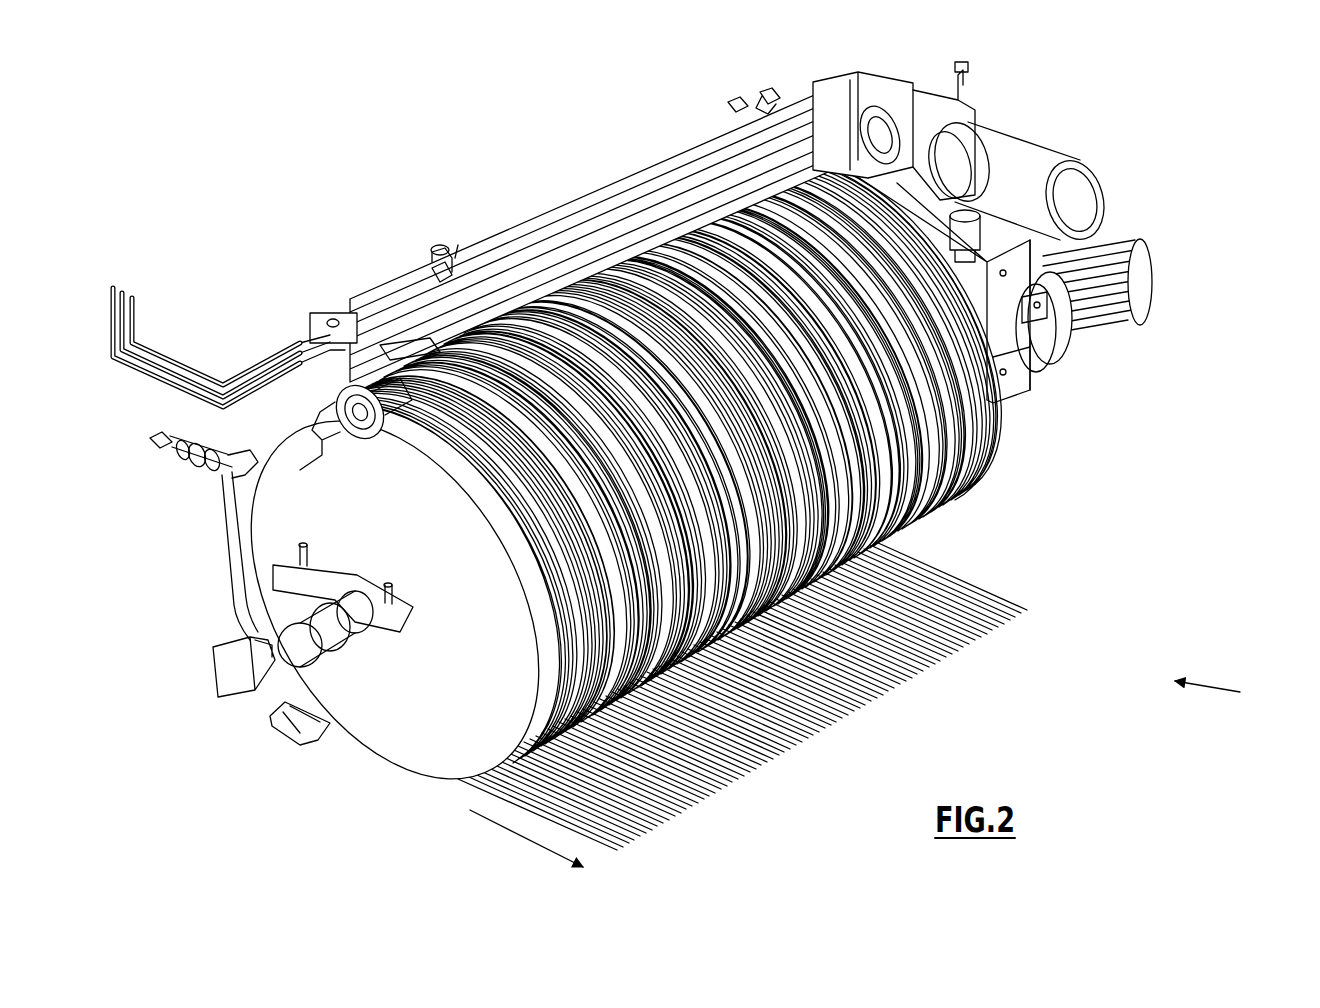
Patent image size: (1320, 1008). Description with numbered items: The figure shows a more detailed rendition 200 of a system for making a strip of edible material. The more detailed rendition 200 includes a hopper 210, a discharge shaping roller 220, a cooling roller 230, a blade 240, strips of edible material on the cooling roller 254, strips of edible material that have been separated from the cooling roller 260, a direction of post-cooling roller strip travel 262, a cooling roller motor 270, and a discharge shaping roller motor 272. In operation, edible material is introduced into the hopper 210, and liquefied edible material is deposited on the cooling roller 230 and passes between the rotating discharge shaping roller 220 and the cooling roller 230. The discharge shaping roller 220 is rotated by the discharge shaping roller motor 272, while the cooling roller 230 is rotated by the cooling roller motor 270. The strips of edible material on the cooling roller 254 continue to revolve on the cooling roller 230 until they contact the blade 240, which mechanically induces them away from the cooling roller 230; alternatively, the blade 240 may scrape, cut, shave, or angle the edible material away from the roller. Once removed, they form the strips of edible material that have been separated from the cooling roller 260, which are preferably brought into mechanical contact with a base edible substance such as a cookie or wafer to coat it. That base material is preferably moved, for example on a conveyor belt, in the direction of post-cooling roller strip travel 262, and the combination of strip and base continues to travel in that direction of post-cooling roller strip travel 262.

The more detailed rendition 200 is at (1240, 692).
The hopper 210 is at (533, 247).
The discharge shaping roller 220 is at (833, 170).
The cooling roller 230 is at (953, 193).
The blade 240 is at (327, 713).
The strips of edible material on the cooling roller 254 is at (933, 397).
The strips of edible material that have been separated from the cooling roller 260 is at (990, 593).
The direction of post-cooling roller strip travel 262 is at (523, 835).
The cooling roller motor 270 is at (1063, 370).
The discharge shaping roller motor 272 is at (1100, 192).